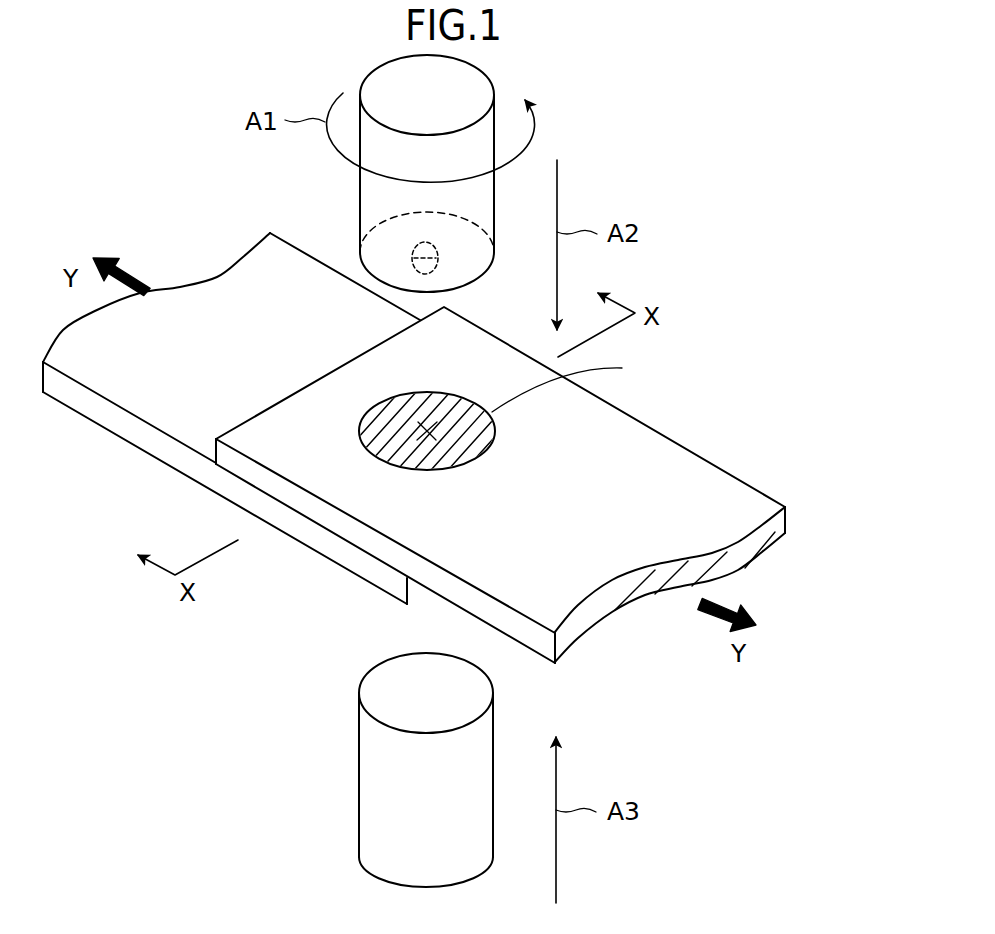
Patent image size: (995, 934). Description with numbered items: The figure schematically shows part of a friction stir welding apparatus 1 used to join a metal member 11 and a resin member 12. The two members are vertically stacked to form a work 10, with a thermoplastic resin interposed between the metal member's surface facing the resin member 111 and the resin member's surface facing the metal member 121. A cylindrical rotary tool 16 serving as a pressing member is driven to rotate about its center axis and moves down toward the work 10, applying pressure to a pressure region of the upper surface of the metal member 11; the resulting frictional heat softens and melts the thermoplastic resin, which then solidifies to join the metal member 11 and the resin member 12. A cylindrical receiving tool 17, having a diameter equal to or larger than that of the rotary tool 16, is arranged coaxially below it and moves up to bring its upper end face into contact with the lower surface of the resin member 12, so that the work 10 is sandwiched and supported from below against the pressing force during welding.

The friction stir welding apparatus 1 is at (712, 128).
The work 10 is at (160, 260).
The metal member 11 is at (540, 485).
The metal member's surface facing resin member 111 is at (752, 566).
The resin member 12 is at (123, 440).
The resin member's surface facing metal member 121 is at (121, 372).
The rotary tool 16 is at (360, 202).
The receiving tool 17 is at (360, 772).